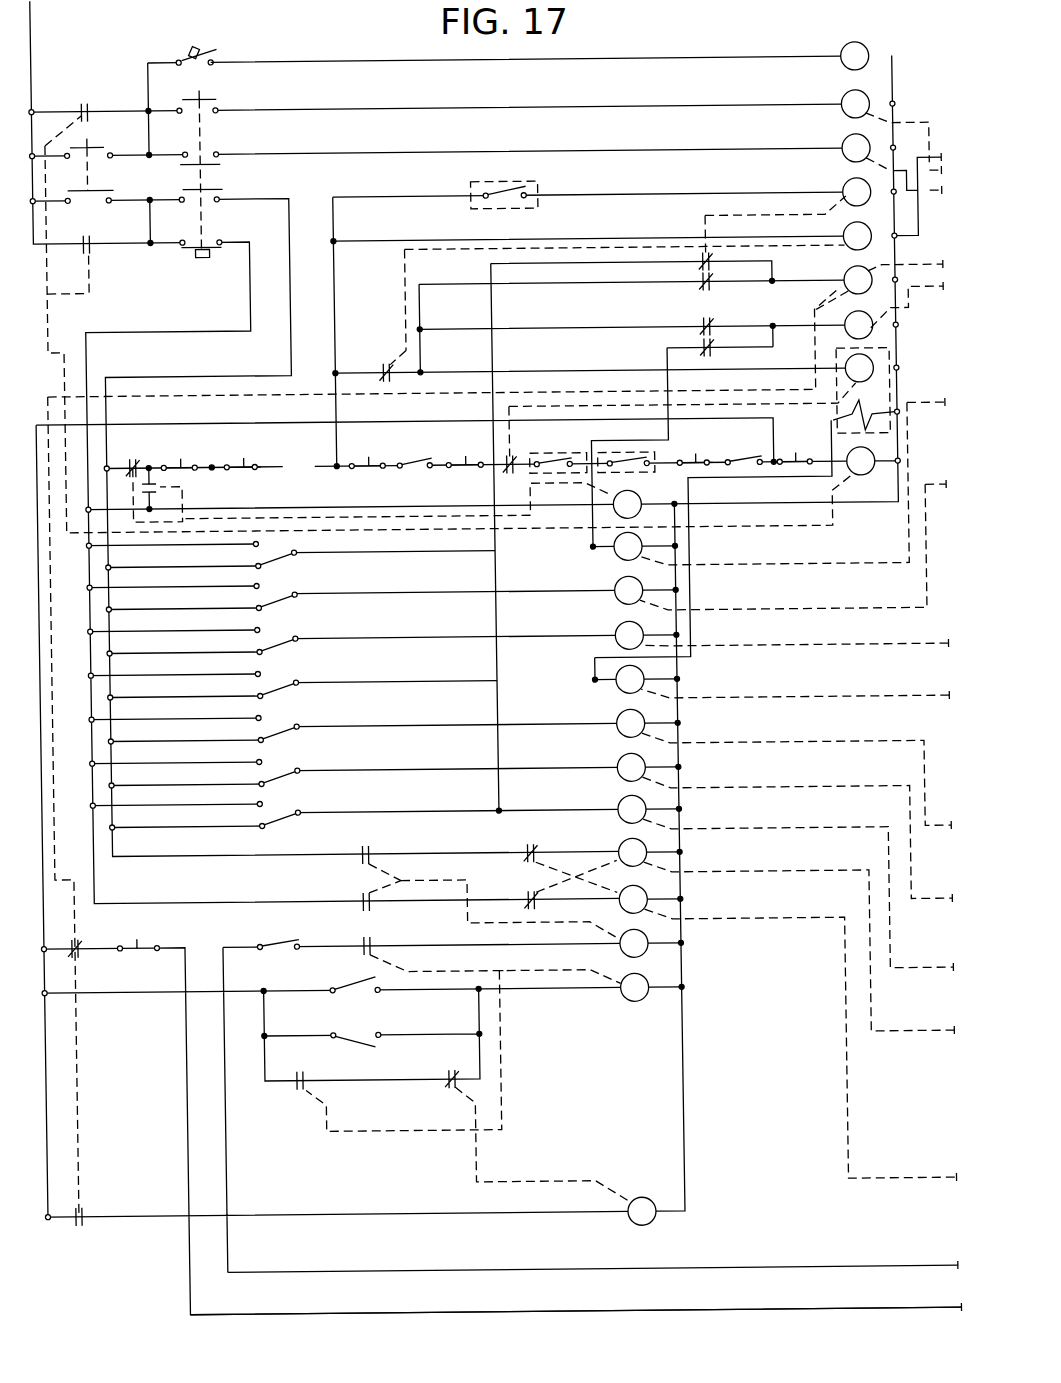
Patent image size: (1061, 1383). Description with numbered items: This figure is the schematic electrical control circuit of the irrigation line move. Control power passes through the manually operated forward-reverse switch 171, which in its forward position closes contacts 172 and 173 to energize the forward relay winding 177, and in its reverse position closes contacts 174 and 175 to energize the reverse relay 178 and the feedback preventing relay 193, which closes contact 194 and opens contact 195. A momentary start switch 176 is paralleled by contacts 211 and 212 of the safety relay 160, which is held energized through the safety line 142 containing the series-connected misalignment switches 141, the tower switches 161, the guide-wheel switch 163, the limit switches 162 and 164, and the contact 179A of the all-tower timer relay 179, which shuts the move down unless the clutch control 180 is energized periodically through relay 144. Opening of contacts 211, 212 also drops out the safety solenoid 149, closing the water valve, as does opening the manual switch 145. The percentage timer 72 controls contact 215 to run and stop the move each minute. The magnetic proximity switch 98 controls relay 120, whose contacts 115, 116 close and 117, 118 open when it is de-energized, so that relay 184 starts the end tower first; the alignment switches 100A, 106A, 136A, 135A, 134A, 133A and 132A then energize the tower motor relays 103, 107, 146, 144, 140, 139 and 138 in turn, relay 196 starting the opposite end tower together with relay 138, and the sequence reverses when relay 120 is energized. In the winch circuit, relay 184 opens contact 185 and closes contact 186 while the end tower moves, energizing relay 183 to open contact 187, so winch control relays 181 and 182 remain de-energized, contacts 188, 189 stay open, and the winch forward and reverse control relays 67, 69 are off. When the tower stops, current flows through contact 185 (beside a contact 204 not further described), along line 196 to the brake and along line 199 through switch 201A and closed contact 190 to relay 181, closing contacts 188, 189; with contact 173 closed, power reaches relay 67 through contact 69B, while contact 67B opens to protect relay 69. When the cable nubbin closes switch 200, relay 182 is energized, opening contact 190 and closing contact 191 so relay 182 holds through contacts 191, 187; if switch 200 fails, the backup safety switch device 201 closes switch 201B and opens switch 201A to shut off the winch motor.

The manually controlled switch 145 is at (183, 60).
The contact 211 is at (85, 102).
The momentary start switch 176 is at (88, 141).
The contact 174 is at (184, 168).
The contact 173 is at (215, 192).
The contact 175 is at (196, 248).
The contact 172 is at (222, 100).
The forward-reverse switch 171 is at (218, 140).
The contact 212 is at (90, 253).
The magnetic proximity switch 98 is at (526, 191).
The contact 117 is at (703, 258).
The contact 115 is at (700, 292).
The contact 118 is at (702, 325).
The contact 116 is at (700, 348).
The contact 215 is at (385, 366).
The limit switch 164 is at (617, 462).
The limit switch 162 is at (562, 457).
The switch 163 is at (476, 462).
The safety line 142 is at (425, 452).
The extreme misalignment safety switches 141 is at (412, 470).
The manually operable switches 161 is at (233, 460).
The contact 179A is at (505, 477).
The contact 195 is at (128, 459).
The contact 194 is at (152, 480).
The feedback preventing relay 193 is at (633, 500).
The relay 138 is at (612, 561).
The relay 139 is at (612, 604).
The relay 140 is at (612, 649).
The relay 144 is at (612, 693).
The relay 146 is at (633, 723).
The relay 107 is at (615, 762).
The relay 103 is at (633, 806).
The winch forward control relay 67 is at (635, 851).
The winch reverse control relay 69 is at (635, 897).
The winch control relay 181 is at (636, 940).
The winch control relay 182 is at (636, 984).
The relay 183 is at (640, 1222).
The safety solenoid 149 is at (843, 57).
The forward relay winding 177 is at (843, 105).
The relay 178 is at (843, 149).
The relay 120 is at (843, 193).
The percentage timer 72 is at (843, 237).
The relay 184 is at (843, 296).
The relay 196 is at (845, 342).
The relay 179 is at (886, 360).
The clutch control 180 is at (829, 427).
The safety relay 160 is at (858, 482).
The alignment switch 132A is at (290, 558).
The alignment switch 133A is at (290, 600).
The alignment switch 134A is at (290, 644).
The alignment switch 135A is at (290, 688).
The alignment switch 136A is at (290, 732).
The switch 106A is at (290, 776).
The switch 100A is at (285, 822).
The contact 188 is at (360, 848).
The contact 69B is at (518, 848).
The contact 189 is at (352, 896).
The contact 67B is at (520, 895).
The contact 190 is at (360, 938).
The contact 185 is at (72, 940).
The contact 186 is at (66, 1205).
The contact 204 is at (135, 940).
The switch 201A is at (280, 942).
The switch 201B is at (346, 985).
The safety switch device 201 is at (311, 987).
The normally closed switch 200 is at (366, 1035).
The contact 187 is at (445, 1075).
The contact 191 is at (288, 1095).
The line 199 is at (478, 1273).